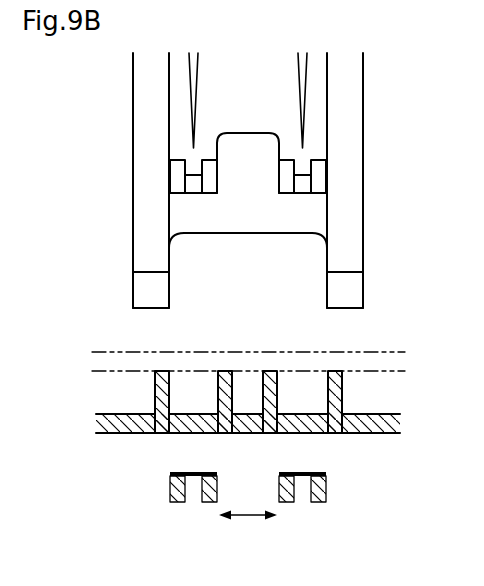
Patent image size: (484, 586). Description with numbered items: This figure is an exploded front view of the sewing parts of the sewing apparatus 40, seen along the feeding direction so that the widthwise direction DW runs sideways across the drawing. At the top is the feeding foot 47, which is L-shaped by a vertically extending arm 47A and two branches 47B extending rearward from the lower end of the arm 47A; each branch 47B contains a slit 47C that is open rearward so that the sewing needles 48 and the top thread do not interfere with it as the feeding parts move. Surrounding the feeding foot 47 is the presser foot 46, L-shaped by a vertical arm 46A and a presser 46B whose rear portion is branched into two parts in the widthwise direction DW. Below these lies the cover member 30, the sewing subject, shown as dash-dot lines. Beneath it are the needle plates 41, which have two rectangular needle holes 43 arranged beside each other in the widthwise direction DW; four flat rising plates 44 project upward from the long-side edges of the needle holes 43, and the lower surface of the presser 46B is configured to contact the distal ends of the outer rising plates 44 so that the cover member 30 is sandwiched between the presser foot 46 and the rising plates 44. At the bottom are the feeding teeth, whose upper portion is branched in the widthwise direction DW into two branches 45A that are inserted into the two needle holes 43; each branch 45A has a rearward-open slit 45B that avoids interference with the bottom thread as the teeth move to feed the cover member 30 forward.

The sewing apparatus 40 is at (394, 74).
The sewing needles 48 is at (299, 78).
The feeding foot 47 is at (270, 167).
The arm 47A is at (315, 132).
The branches 47B is at (172, 173).
The slit 47C is at (190, 176).
The presser foot 46 is at (260, 262).
The arm 46A is at (315, 217).
The presser 46B is at (133, 288).
The cover member 30 is at (372, 352).
The needle plates 41 is at (130, 414).
The needle holes 43 is at (287, 436).
The rising plates 44 is at (217, 392).
The branches 45A is at (170, 483).
The slit 45B is at (202, 501).
The widthwise direction DW is at (248, 516).